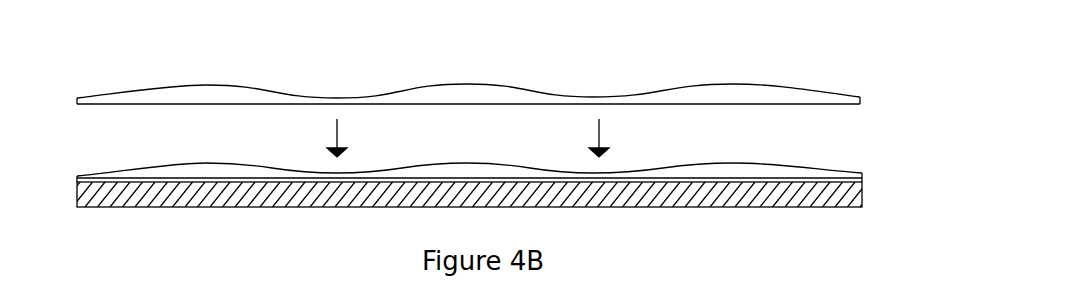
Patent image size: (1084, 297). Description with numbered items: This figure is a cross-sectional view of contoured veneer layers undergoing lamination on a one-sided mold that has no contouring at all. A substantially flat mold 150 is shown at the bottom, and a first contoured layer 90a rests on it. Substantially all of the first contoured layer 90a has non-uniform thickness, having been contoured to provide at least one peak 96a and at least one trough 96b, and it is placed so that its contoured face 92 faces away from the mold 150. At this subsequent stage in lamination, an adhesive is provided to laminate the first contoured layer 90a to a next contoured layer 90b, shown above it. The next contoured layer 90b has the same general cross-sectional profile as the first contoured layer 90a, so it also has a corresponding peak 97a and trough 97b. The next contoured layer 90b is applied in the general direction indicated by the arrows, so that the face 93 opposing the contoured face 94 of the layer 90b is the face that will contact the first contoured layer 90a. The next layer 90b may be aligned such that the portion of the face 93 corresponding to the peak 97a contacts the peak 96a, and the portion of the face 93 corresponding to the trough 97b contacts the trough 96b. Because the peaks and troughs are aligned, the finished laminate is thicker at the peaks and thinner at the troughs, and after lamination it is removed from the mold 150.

The first contoured layer 90a is at (827, 176).
The next contoured layer 90b is at (780, 96).
The contoured face 92 is at (695, 164).
The face 93 is at (495, 105).
The contoured face 94 is at (594, 96).
The peak 96a is at (207, 163).
The trough 96b is at (333, 172).
The peak 97a is at (205, 84).
The trough 97b is at (335, 96).
The mold 150 is at (738, 207).